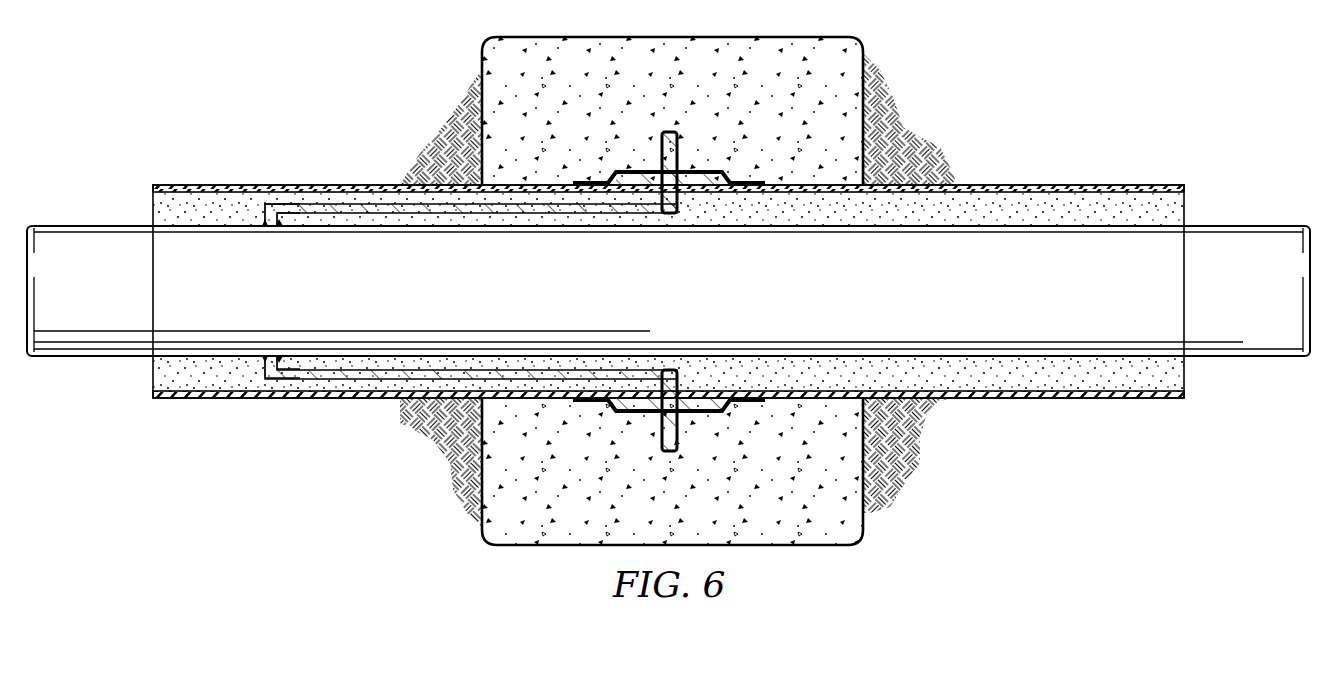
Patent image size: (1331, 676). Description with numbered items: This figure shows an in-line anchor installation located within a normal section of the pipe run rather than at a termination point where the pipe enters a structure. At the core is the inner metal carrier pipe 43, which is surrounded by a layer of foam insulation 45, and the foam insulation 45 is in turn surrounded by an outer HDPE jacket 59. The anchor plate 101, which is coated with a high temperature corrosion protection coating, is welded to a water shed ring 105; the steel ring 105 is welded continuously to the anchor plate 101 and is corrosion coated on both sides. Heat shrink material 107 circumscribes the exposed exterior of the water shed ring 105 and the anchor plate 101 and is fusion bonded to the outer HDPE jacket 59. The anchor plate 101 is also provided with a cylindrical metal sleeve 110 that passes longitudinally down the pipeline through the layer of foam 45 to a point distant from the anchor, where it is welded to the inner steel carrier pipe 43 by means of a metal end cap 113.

The inner metal carrier pipe 43 is at (58, 224).
The foam insulation 45 is at (245, 383).
The HDPE jacket 59 is at (998, 398).
The cylindrical metal sleeve 110 is at (386, 194).
The metal end cap 113 is at (254, 207).
The anchor plate 101 is at (683, 375).
The water shed ring 105 is at (713, 398).
The heat shrink material 107 is at (749, 181).